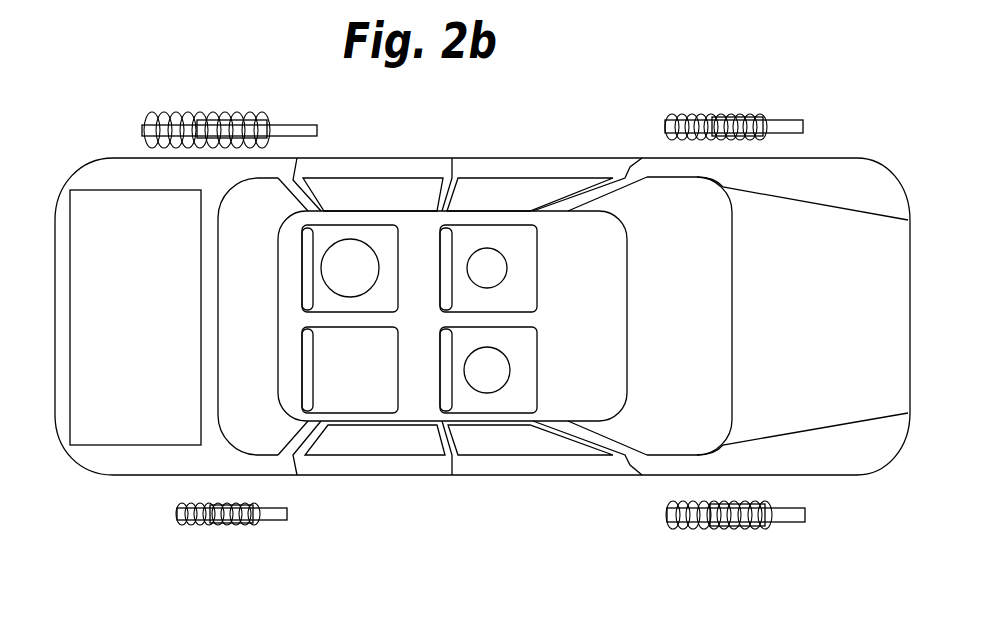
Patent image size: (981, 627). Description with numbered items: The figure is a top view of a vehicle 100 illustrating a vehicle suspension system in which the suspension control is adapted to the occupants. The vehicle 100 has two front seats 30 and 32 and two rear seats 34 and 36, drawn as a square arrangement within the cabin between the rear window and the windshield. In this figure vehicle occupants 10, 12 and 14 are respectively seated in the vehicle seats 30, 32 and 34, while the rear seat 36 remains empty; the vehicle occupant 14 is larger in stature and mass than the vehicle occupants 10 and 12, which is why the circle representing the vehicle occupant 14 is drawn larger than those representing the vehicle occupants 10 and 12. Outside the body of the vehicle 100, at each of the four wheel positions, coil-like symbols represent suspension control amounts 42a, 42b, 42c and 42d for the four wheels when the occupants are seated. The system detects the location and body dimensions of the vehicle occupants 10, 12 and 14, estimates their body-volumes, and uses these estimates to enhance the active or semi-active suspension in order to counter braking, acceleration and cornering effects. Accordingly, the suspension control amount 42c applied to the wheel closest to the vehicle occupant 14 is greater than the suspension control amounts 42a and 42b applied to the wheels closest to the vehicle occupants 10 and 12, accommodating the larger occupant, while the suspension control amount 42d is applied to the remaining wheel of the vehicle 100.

The vehicle occupant 10 is at (487, 268).
The vehicle occupant 12 is at (487, 370).
The vehicle occupant 14 is at (350, 268).
The front seat 30 is at (487, 225).
The front seat 32 is at (488, 413).
The rear seat 34 is at (349, 225).
The rear seat 36 is at (350, 413).
The suspension control amount 42a is at (740, 100).
The suspension control amount 42b is at (715, 535).
The suspension control amount 42c is at (207, 100).
The suspension control amount 42d is at (228, 537).
The vehicle 100 is at (482, 316).